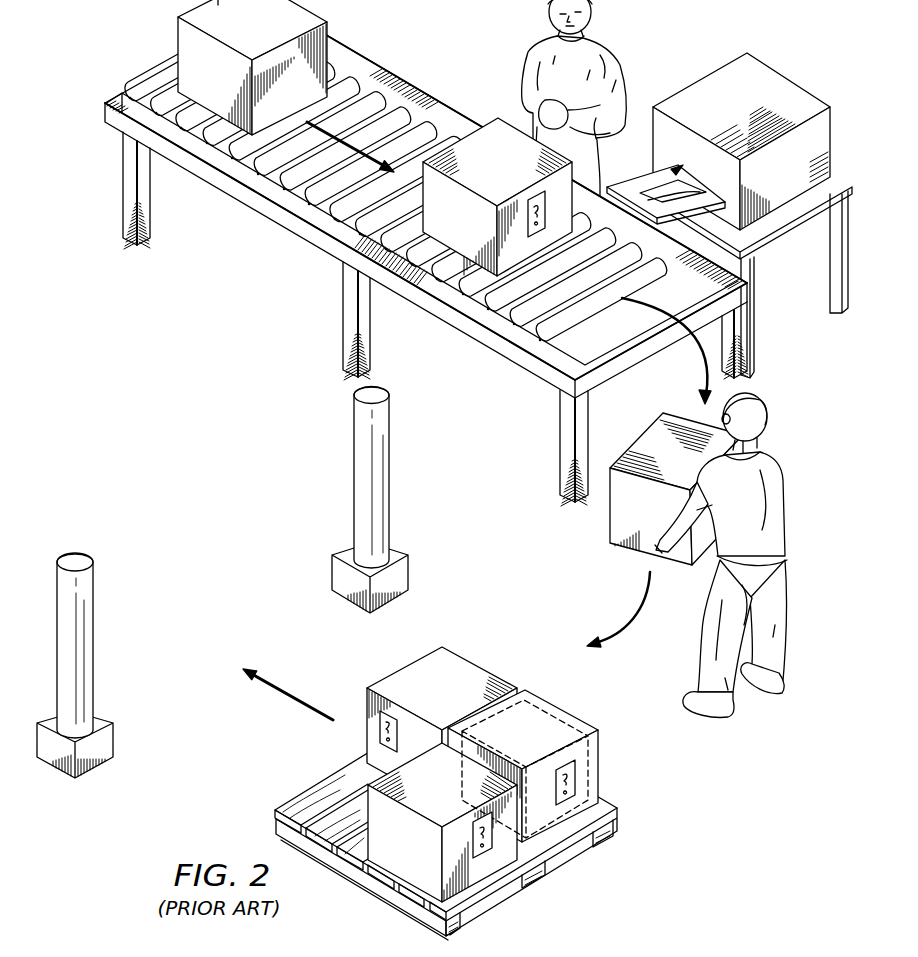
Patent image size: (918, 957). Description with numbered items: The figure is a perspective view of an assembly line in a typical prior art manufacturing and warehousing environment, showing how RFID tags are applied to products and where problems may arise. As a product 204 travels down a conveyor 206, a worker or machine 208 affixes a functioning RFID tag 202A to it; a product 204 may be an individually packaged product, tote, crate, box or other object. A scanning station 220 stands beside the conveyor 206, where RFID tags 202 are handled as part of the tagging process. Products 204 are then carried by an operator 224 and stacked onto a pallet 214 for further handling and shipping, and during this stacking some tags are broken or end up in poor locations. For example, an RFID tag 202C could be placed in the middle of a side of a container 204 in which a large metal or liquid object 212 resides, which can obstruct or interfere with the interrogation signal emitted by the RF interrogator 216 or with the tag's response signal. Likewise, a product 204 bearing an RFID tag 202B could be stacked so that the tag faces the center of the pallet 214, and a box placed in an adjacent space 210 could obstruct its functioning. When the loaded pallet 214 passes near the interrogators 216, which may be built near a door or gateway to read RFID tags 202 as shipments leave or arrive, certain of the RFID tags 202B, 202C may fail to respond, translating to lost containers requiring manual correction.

The RFID tag 202 is at (662, 192).
The functioning RFID tag 202A is at (527, 224).
The RFID tag 202B is at (378, 731).
The RFID tag 202C is at (578, 781).
The product 204 is at (457, 670).
The conveyor 206 is at (284, 219).
The worker or machine 208 is at (612, 62).
The adjacent space 210 is at (276, 790).
The large metal or liquid object 212 is at (541, 727).
The pallet 214 is at (612, 828).
The RF interrogator 216 is at (93, 643).
The scanning station 220 is at (766, 74).
The operator 224 is at (780, 459).